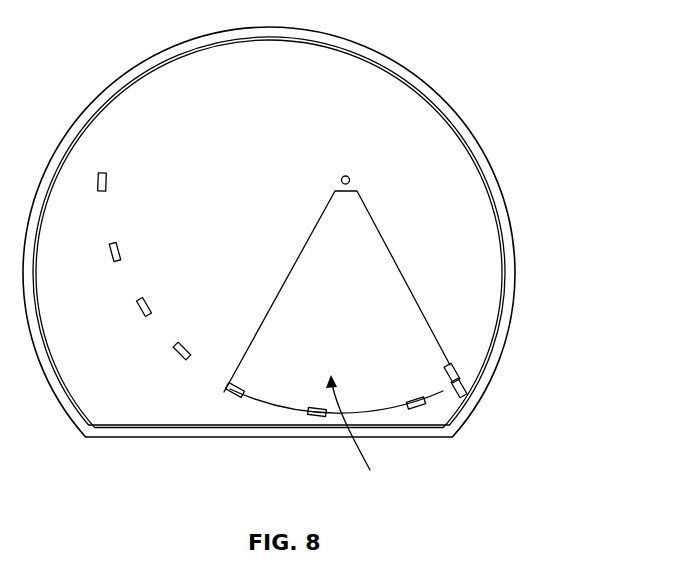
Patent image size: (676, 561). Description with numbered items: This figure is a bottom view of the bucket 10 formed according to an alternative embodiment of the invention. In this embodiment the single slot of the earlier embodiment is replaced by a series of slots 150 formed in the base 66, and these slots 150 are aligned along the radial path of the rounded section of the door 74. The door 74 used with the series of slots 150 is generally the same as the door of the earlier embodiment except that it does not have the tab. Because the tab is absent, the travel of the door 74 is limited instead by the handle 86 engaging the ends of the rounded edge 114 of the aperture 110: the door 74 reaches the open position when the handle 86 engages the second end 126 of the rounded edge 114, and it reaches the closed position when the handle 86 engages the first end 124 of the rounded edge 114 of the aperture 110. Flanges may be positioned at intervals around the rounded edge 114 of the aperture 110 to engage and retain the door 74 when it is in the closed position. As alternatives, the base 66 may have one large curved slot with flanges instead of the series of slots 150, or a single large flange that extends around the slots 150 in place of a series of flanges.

The bucket 10 is at (403, 59).
The base 66 is at (479, 202).
The handle 86 is at (451, 401).
The door 74 is at (384, 263).
The rounded edge 114 is at (272, 402).
The second end 126 is at (227, 385).
The aperture 110 is at (360, 438).
The first end 124 is at (466, 377).
The slots 150 is at (103, 173).